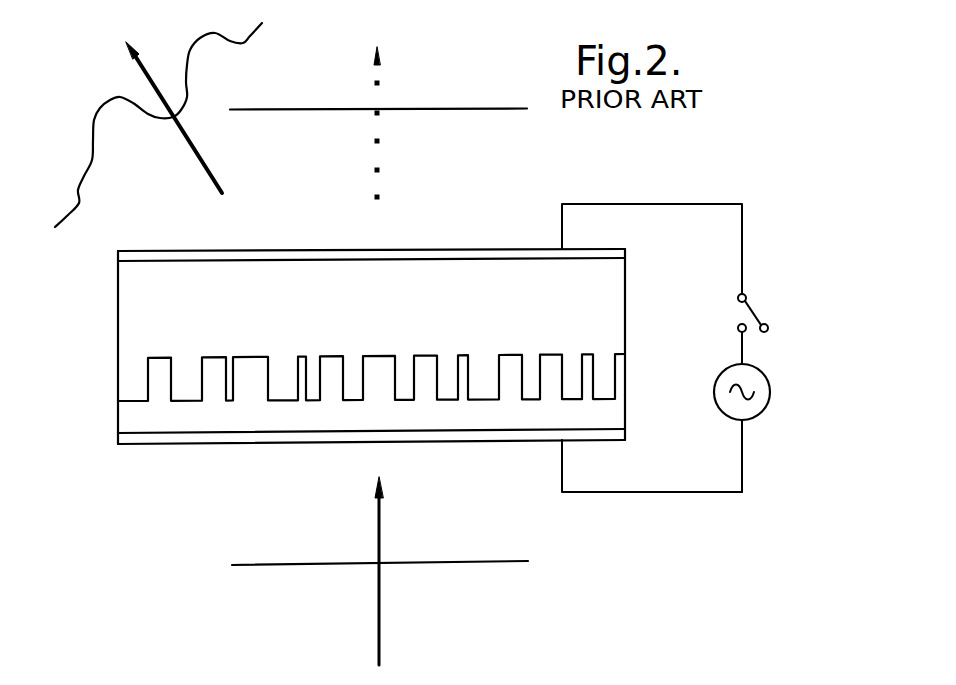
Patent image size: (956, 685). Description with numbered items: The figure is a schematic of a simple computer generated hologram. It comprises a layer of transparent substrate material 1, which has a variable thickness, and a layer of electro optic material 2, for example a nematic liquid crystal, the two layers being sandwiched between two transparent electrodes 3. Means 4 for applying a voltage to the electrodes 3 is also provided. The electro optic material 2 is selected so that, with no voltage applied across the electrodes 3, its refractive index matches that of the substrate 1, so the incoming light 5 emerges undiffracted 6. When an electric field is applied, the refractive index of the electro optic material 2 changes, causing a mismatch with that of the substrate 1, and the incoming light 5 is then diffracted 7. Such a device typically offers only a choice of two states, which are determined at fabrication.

The transparent substrate material 1 is at (594, 423).
The electro optic material 2 is at (593, 305).
The transparent electrodes 3 is at (118, 253).
The means for applying a voltage 4 is at (775, 295).
The incoming light 5 is at (382, 620).
The undiffracted light 6 is at (381, 142).
The diffracted light 7 is at (173, 117).